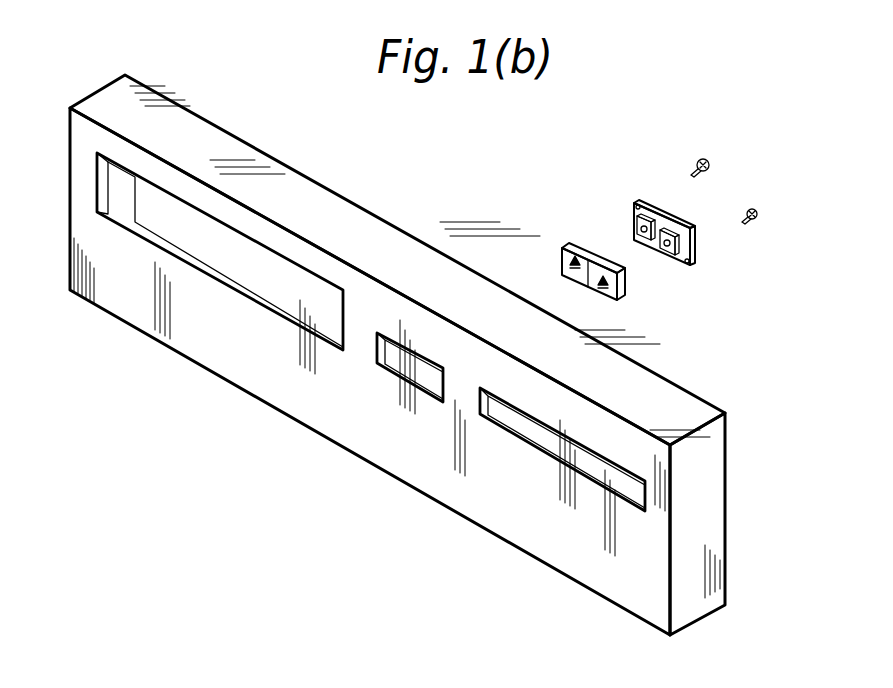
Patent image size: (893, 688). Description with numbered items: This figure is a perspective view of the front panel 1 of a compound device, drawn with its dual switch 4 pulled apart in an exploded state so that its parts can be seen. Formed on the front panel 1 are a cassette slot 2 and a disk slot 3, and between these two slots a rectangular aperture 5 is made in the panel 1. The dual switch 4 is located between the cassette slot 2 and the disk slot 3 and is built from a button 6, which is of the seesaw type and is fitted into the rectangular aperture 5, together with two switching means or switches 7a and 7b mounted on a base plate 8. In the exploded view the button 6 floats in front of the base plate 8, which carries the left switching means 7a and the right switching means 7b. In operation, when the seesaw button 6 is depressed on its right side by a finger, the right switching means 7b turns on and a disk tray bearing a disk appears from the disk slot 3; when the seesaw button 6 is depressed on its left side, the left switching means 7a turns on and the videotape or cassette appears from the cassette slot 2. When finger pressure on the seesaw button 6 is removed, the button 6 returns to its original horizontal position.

The front panel 1 is at (327, 413).
The cassette slot 2 is at (260, 277).
The disk slot 3 is at (555, 441).
The dual switch 4 is at (628, 260).
The rectangular aperture 5 is at (428, 373).
The button 6 is at (623, 300).
The left switching means 7a is at (633, 215).
The right switching means 7b is at (687, 243).
The base plate 8 is at (680, 218).